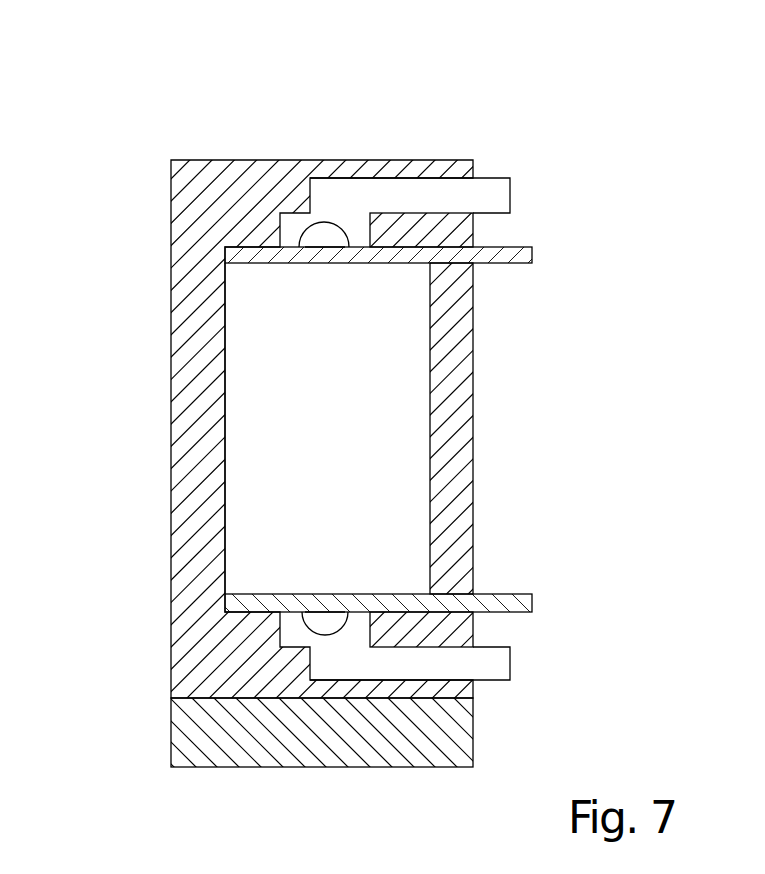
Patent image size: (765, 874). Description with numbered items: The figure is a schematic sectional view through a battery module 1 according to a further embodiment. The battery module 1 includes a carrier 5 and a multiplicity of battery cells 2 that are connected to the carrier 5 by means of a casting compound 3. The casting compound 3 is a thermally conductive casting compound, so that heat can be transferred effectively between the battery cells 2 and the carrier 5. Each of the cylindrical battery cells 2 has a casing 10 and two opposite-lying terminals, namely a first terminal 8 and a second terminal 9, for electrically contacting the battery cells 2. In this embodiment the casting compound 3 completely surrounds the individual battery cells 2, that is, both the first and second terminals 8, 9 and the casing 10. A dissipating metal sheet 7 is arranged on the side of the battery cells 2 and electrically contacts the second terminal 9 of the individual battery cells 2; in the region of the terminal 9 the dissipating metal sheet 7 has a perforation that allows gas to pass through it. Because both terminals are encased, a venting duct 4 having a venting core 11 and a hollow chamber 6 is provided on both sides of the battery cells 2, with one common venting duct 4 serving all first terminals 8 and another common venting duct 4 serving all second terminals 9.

The battery module 1 is at (140, 118).
The battery cells 2 is at (400, 424).
The casting compound 3 is at (188, 555).
The venting duct 4 is at (453, 192).
The carrier 5 is at (355, 720).
The hollow chamber 6 is at (327, 233).
The dissipating metal sheet 7 is at (525, 253).
The first terminal 8 is at (317, 252).
The second terminal 9 is at (300, 624).
The casing 10 is at (222, 416).
The venting core 11 is at (390, 192).